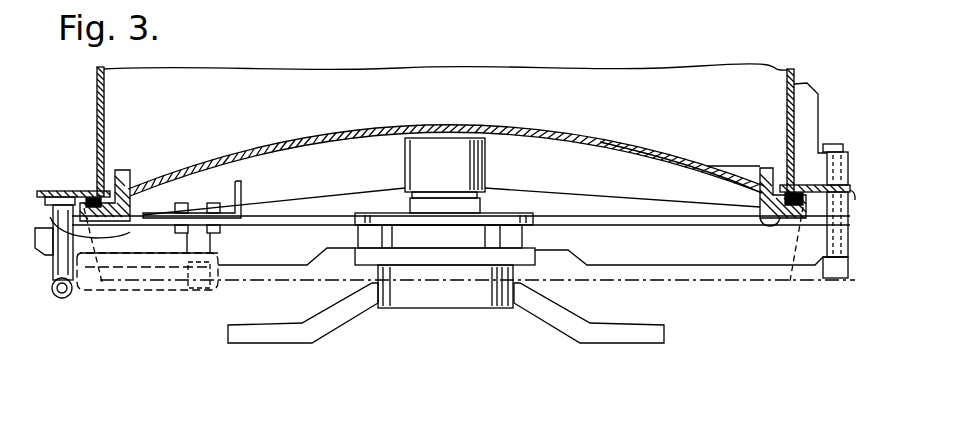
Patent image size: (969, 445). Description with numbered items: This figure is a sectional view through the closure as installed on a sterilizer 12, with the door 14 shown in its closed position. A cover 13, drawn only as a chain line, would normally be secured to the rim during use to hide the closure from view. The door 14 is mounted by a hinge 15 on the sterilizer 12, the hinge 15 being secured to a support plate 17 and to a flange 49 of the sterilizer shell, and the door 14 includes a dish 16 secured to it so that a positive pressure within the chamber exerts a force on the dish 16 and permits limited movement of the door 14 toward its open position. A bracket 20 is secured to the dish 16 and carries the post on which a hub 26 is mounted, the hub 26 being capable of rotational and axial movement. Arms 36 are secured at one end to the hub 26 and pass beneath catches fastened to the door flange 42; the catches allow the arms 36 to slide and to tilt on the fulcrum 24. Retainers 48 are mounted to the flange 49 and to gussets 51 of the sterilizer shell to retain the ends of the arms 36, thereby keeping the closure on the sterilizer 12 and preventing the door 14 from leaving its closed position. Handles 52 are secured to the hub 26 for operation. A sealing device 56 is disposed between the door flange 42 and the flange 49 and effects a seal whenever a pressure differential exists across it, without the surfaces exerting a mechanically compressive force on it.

The sterilizer 12 is at (96, 92).
The cover 13 is at (612, 280).
The door 14 is at (327, 139).
The hinge 15 is at (152, 291).
The dish 16 is at (605, 142).
The support plate 17 is at (244, 186).
The bracket 20 is at (447, 148).
The fulcrum 24 is at (50, 217).
The hub 26 is at (441, 293).
The arms 36 is at (264, 250).
The door flange 42 is at (118, 171).
The retainers 48 is at (846, 276).
The flange 49 is at (45, 191).
The gussets 51 is at (820, 128).
The handles 52 is at (301, 336).
The sealing device 56 is at (91, 198).